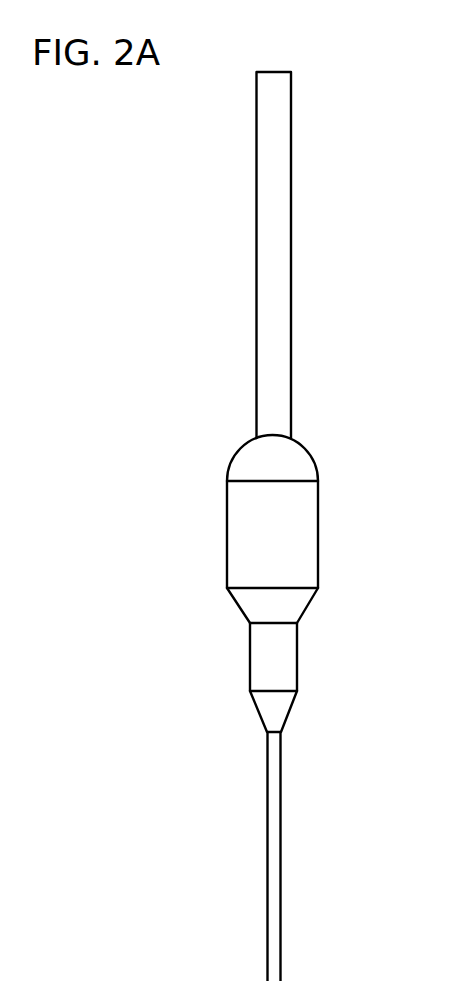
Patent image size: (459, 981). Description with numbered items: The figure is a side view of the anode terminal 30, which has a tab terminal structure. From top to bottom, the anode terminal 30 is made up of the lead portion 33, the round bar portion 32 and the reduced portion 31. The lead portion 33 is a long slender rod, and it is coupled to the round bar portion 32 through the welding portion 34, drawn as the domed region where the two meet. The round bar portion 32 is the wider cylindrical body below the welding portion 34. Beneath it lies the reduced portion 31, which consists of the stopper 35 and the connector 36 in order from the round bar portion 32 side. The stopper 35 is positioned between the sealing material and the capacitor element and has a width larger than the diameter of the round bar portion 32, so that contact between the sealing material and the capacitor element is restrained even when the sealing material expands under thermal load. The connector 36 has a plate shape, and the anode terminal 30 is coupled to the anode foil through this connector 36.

The anode terminal 30 is at (333, 188).
The reduced portion 31 is at (338, 627).
The round bar portion 32 is at (315, 523).
The lead portion 33 is at (287, 358).
The welding portion 34 is at (307, 460).
The stopper 35 is at (293, 668).
The connector 36 is at (275, 758).